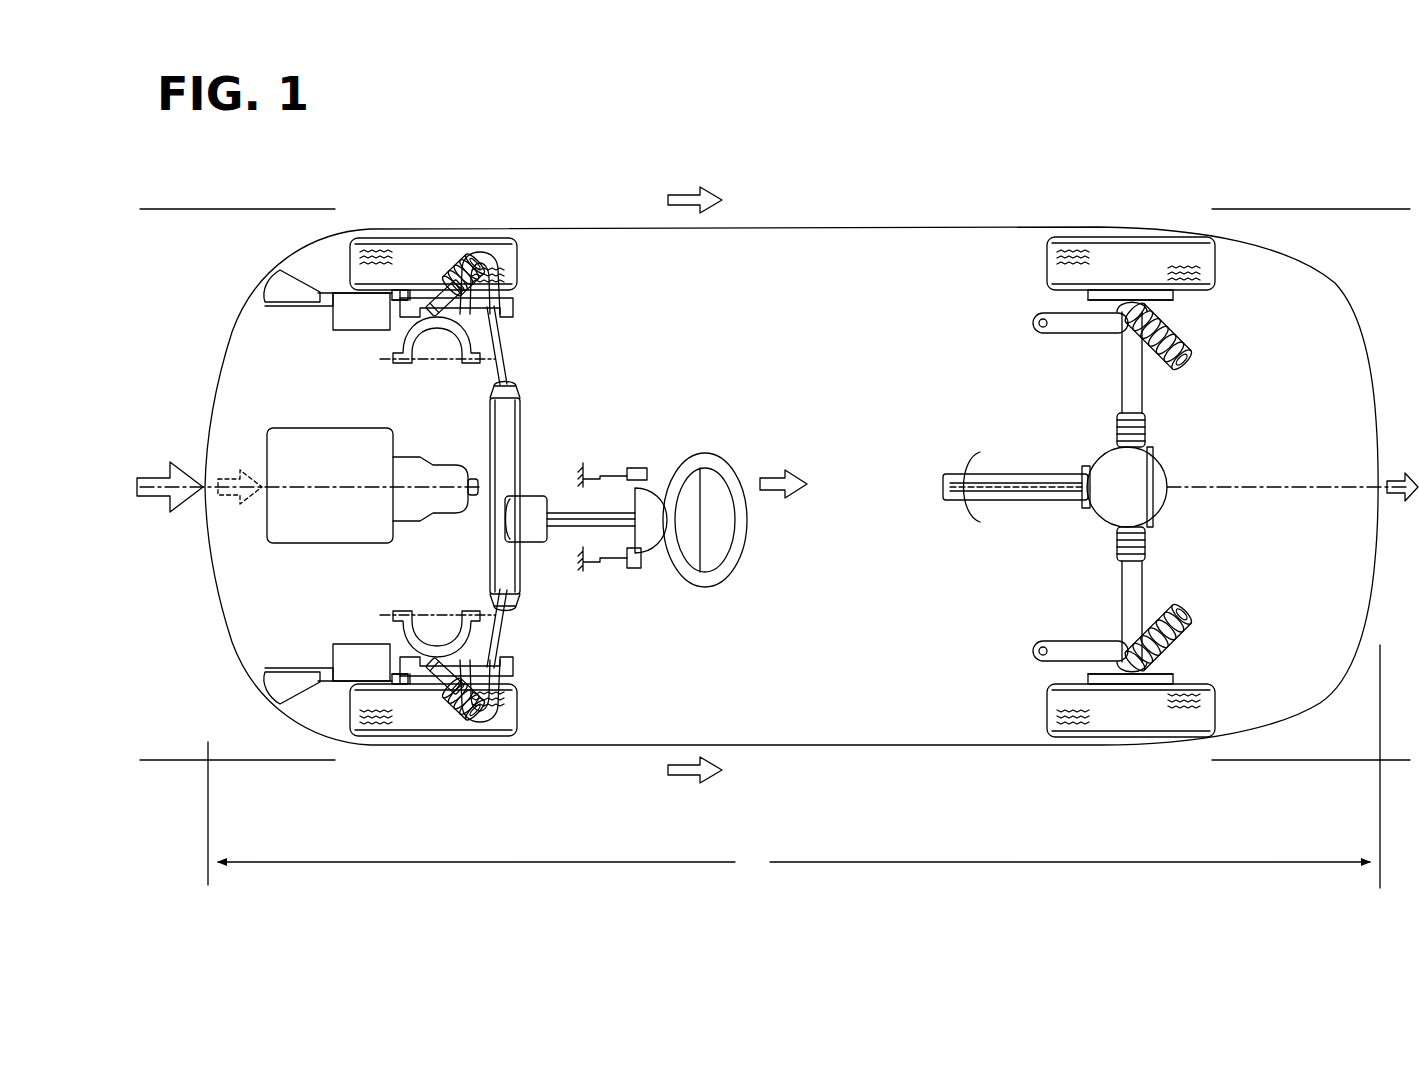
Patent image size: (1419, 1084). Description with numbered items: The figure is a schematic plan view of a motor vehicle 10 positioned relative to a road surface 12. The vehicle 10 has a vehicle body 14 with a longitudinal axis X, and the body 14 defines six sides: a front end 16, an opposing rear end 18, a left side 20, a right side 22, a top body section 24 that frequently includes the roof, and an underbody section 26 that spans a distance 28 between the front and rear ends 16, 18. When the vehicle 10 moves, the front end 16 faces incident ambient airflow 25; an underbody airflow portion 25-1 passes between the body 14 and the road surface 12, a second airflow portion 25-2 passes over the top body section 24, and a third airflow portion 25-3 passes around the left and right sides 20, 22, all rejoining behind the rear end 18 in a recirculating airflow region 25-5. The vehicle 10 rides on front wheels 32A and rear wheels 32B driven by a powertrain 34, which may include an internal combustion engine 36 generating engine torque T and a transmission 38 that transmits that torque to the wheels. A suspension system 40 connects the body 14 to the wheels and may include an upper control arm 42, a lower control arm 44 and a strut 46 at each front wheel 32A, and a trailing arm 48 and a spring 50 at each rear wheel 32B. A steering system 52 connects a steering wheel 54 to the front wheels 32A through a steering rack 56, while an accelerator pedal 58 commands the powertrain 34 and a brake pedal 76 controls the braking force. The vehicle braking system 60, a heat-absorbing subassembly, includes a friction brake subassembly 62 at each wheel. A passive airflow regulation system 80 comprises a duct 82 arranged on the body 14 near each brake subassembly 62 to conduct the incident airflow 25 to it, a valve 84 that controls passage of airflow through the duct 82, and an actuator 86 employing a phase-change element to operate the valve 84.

The motor vehicle 10 is at (1134, 142).
The road surface 12 is at (1372, 290).
The vehicle body 14 is at (880, 222).
The front end 16 is at (207, 405).
The rear end 18 is at (1380, 566).
The left side 20 is at (788, 745).
The right side 22 is at (766, 226).
The top body section 24 is at (880, 718).
The incident ambient airflow 25 is at (183, 470).
The underbody airflow portion 25-1 is at (215, 500).
The second airflow portion 25-2 is at (773, 498).
The third airflow portion 25-3 is at (677, 193).
The recirculating airflow region 25-5 is at (1385, 480).
The underbody section 26 is at (232, 590).
The distance 28 is at (794, 766).
The front wheels 32A is at (403, 229).
The rear wheels 32B is at (1156, 227).
The powertrain 34 is at (260, 500).
The internal combustion engine 36 is at (288, 484).
The transmission 38 is at (430, 472).
The vehicle suspension system 40 is at (562, 317).
The upper control arm 42 is at (505, 250).
The lower control arm 44 is at (500, 340).
The strut 46 is at (466, 256).
The trailing arm 48 is at (1033, 325).
The spring 50 is at (1188, 362).
The vehicle steering system 52 is at (550, 478).
The steering wheel 54 is at (730, 456).
The steering rack 56 is at (513, 440).
The accelerator pedal 58 is at (641, 468).
The vehicle braking system 60 is at (387, 309).
The friction brake subassembly 62 is at (391, 299).
The brake pedal 76 is at (645, 566).
The passive airflow regulation system 80 is at (230, 285).
The duct 82 is at (278, 290).
The valve 84 is at (325, 308).
The actuator 86 is at (402, 298).
The engine torque T is at (979, 463).
The longitudinal axis X is at (1248, 487).